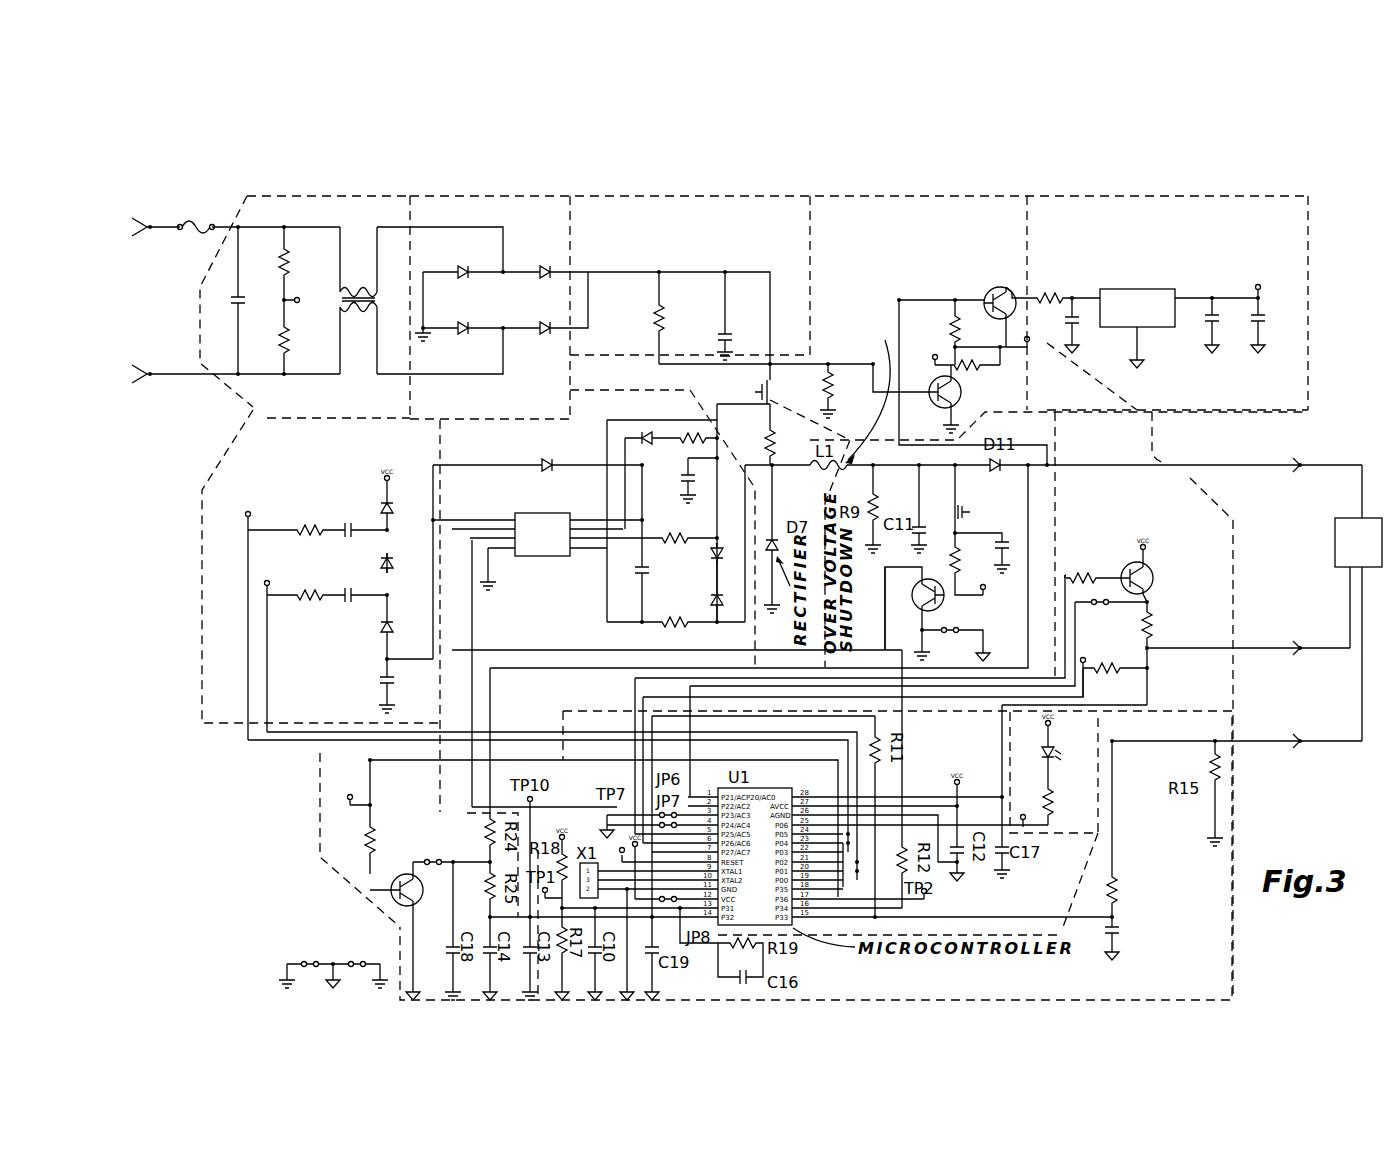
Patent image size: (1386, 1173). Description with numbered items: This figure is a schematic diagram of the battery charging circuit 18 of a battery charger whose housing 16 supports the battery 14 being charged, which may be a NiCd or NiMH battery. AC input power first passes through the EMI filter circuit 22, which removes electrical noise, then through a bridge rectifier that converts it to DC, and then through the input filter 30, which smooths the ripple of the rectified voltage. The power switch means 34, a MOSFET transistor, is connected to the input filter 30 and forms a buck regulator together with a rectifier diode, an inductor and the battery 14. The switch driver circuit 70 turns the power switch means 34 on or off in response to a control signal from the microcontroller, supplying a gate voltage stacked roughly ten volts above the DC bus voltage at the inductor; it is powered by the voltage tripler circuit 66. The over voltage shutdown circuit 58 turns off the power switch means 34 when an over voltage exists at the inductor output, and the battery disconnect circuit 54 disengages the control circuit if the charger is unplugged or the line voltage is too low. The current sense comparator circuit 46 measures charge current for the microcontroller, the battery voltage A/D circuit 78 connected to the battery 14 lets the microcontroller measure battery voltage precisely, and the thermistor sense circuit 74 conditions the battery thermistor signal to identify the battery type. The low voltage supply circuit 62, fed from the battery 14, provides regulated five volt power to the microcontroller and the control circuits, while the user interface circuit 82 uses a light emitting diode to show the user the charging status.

The battery 14 is at (1335, 541).
The housing 16 is at (553, 223).
The battery charging circuit 18 is at (1243, 756).
The EMI filter circuit 22 is at (247, 418).
The input filter 30 is at (758, 234).
The power switch means 34 is at (755, 393).
The current sense comparator circuit 46 is at (1206, 952).
The battery disconnect circuit 54 is at (886, 282).
The over voltage shutdown circuit 58 is at (914, 628).
The low voltage supply circuit 62 is at (1246, 273).
The voltage tripler circuit 66 is at (325, 491).
The switch driver circuit 70 is at (548, 639).
The thermistor sense circuit 74 is at (1123, 539).
The battery voltage A/D circuit 78 is at (320, 807).
The user interface circuit 82 is at (1008, 748).